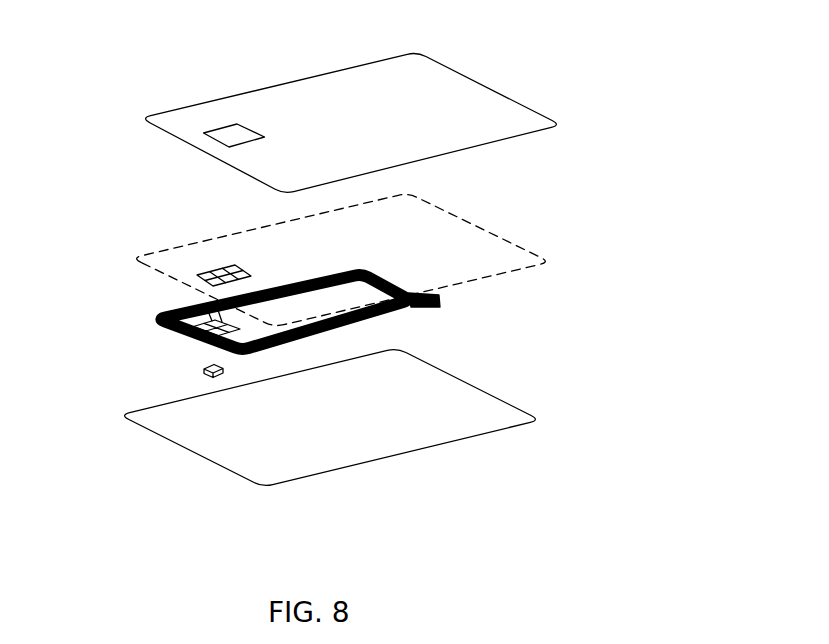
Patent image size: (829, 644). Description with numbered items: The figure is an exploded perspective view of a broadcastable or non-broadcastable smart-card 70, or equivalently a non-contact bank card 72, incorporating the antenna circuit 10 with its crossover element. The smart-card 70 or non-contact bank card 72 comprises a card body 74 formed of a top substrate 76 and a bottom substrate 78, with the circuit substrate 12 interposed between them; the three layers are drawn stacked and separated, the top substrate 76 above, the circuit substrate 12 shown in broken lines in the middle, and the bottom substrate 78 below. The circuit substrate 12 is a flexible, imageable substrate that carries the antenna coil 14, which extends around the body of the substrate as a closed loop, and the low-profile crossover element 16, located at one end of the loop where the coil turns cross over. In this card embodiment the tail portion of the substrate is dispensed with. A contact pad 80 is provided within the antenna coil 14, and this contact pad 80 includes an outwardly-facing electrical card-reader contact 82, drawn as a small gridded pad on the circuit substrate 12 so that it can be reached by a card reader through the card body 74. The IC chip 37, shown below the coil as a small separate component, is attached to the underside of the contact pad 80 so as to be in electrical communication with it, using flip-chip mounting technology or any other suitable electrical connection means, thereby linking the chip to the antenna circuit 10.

The antenna circuit 10 is at (183, 334).
The circuit substrate 12 is at (475, 242).
The antenna coil 14 is at (392, 322).
The low-profile crossover element 16 is at (445, 303).
The IC chip 37 is at (205, 372).
The smart-card 70 is at (381, 100).
The non-contact bank card 72 is at (565, 86).
The card body 74 is at (175, 108).
The top substrate 76 is at (323, 93).
The bottom substrate 78 is at (480, 423).
The contact pad 80 is at (208, 323).
The electrical card-reader contact 82 is at (207, 268).